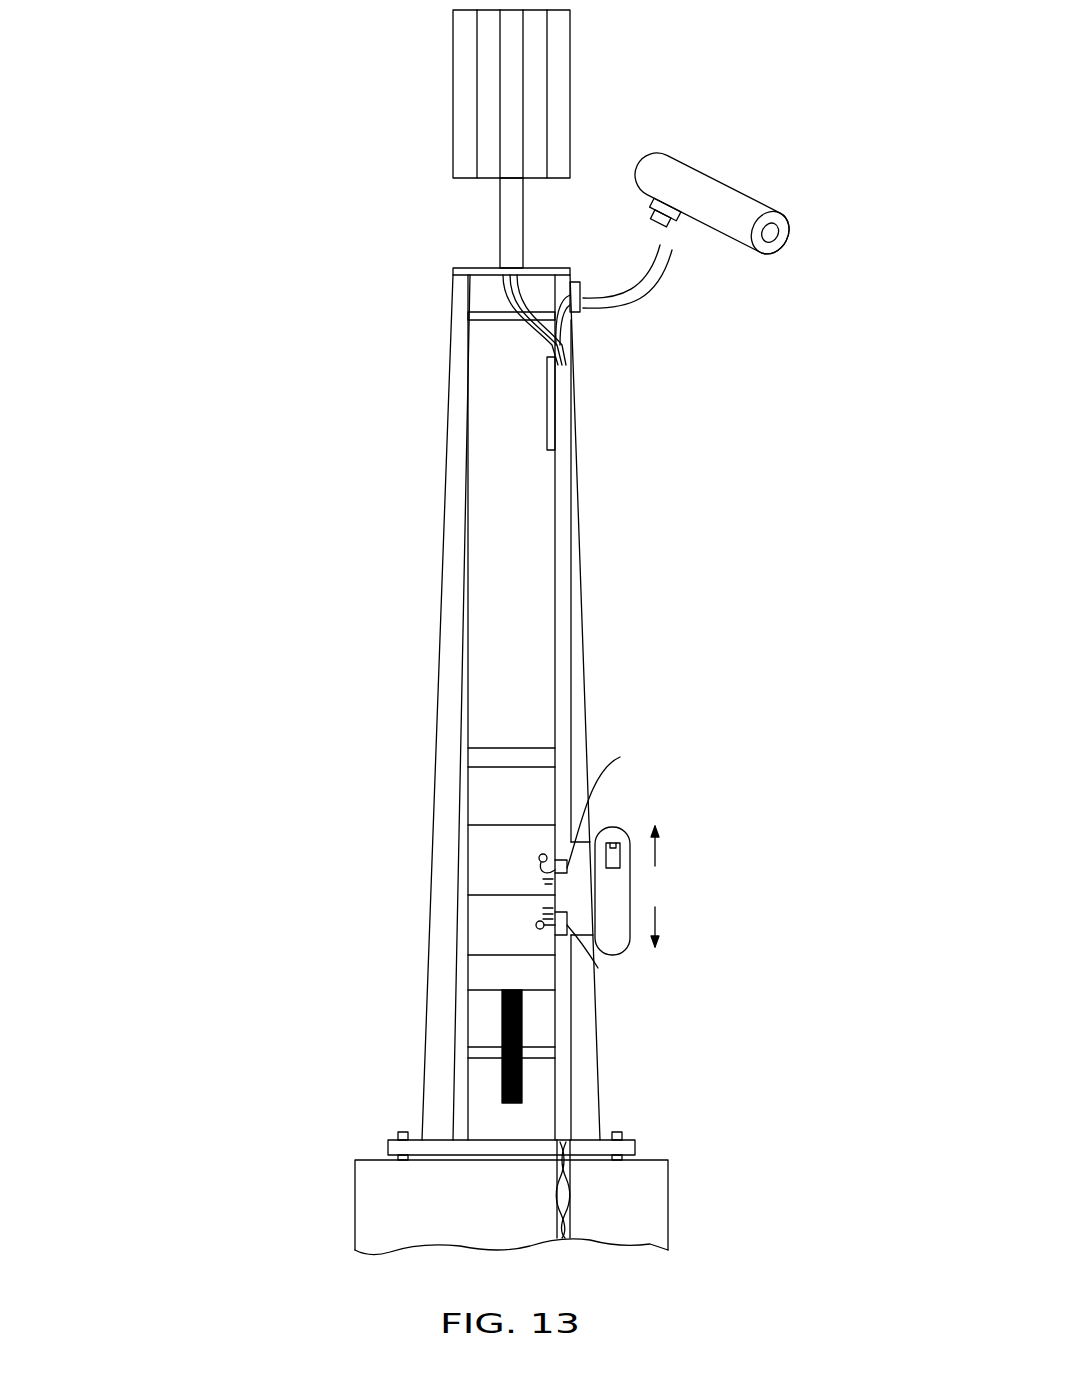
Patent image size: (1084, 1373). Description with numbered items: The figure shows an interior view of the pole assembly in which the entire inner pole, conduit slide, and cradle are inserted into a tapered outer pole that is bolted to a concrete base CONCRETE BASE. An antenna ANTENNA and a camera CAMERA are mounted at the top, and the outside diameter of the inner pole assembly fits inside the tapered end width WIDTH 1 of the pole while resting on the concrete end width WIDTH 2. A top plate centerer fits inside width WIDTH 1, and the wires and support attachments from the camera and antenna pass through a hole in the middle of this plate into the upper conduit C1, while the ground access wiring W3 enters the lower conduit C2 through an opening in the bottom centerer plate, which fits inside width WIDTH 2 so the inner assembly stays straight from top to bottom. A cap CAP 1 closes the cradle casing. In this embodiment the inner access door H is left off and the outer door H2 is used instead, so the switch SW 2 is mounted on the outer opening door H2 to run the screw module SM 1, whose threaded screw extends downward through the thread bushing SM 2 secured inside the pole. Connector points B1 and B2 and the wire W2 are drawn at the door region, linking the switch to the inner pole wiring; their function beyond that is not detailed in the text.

The antenna ANTENNA is at (570, 38).
The camera CAMERA is at (715, 178).
The tapered end width 1 WIDTH 1 is at (450, 322).
The concrete end width 2 WIDTH 2 is at (424, 1082).
The conduit C1 is at (565, 682).
The lower conduit C2 is at (563, 1027).
The cap 1 CAP 1 is at (467, 758).
The access door H is at (575, 892).
The switch SW2 SW 2 is at (613, 830).
The outer door H2 is at (658, 886).
The bulb/connector 1 B1 is at (532, 863).
The bulb/connector 2 B2 is at (532, 923).
The wire 2 W2 is at (613, 803).
The ground access wiring W3 is at (580, 945).
The screw module SM1 SM 1 is at (511, 1028).
The thread bushing SM2 SM 2 is at (560, 1053).
The concrete base CONCRETE BASE is at (368, 1202).